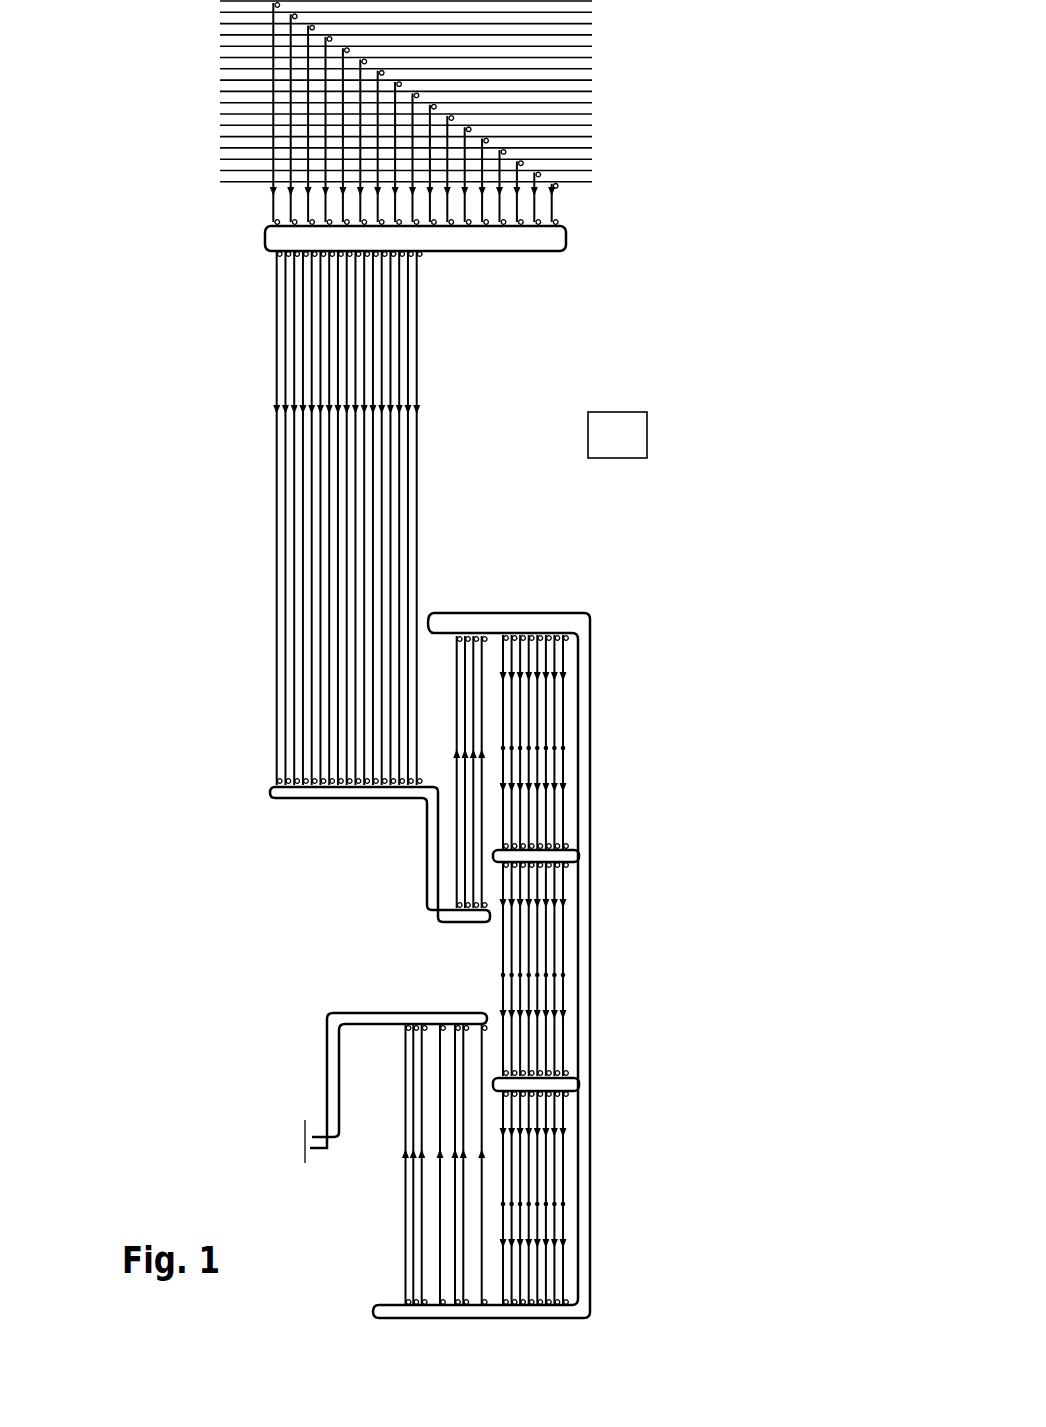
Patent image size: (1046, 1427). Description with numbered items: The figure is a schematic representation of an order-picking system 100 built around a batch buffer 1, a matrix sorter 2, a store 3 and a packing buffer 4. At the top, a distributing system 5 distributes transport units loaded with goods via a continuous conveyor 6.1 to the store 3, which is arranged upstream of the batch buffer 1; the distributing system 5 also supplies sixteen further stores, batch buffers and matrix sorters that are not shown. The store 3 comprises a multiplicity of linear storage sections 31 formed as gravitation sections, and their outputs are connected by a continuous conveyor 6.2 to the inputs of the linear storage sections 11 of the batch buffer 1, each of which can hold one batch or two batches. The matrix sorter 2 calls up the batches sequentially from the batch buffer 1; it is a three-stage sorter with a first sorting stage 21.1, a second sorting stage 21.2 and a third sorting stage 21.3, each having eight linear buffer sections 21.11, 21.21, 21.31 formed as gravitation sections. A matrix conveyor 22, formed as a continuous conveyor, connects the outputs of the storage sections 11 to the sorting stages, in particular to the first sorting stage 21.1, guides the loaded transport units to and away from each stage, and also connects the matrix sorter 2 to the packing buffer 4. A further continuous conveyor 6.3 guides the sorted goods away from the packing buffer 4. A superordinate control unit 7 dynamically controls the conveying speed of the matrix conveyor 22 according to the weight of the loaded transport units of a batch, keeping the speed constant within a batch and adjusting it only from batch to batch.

The order-picking system 100 is at (196, 313).
The distributing system 5 is at (686, 100).
The continuous conveyor 6.1 is at (522, 252).
The store 3 is at (230, 500).
The linear storage section 31 is at (413, 390).
The superordinate control unit 7 is at (617, 435).
The matrix conveyor 22 is at (568, 613).
The first sorting stage 21.1 is at (672, 632).
The linear buffer section 21.11 is at (560, 771).
The continuous conveyor 6.2 is at (320, 797).
The linear storage section 11 is at (457, 840).
The batch buffer 1 is at (452, 936).
The linear buffer section 21.21 is at (562, 998).
The second sorting stage 21.2 is at (672, 855).
The matrix sorter 2 is at (737, 615).
The continuous conveyor 6.3 is at (327, 1081).
The linear buffer section 21.31 is at (562, 1210).
The third sorting stage 21.3 is at (672, 1085).
The packing buffer 4 is at (385, 1251).